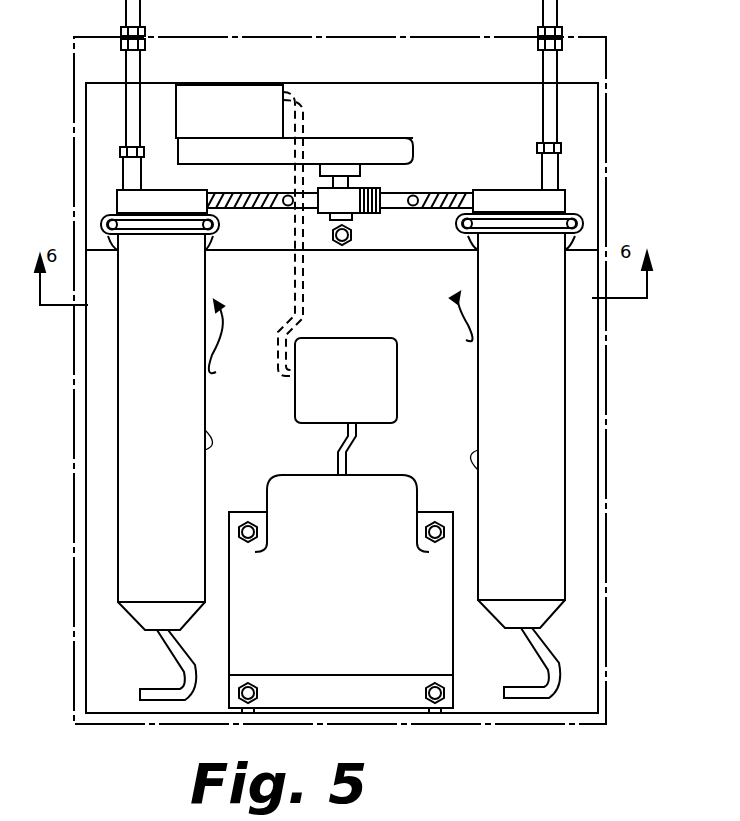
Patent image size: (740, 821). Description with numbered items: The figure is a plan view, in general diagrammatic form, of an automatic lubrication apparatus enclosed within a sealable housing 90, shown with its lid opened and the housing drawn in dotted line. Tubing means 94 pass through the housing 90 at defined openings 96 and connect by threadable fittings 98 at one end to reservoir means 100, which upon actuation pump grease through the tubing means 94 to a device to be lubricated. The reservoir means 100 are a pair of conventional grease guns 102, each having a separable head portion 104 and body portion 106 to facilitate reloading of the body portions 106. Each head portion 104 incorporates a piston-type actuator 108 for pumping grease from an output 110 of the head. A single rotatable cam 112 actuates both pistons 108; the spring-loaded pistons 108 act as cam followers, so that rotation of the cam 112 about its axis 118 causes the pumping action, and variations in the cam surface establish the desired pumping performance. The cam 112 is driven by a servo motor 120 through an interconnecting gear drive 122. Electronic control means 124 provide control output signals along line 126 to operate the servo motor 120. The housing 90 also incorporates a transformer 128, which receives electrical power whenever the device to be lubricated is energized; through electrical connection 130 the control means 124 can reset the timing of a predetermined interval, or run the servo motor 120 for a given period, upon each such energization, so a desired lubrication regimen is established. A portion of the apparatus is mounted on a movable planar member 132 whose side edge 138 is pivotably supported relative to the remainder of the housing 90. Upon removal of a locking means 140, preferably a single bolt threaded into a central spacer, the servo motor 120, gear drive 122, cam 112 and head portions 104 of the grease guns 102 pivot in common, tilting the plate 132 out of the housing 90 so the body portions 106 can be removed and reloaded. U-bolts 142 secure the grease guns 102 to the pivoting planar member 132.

The sealable housing 90 is at (607, 398).
The tubing means 94 is at (140, 15).
The defined openings 96 is at (144, 42).
The threadable fittings 98 is at (122, 150).
The reservoir means 100 is at (341, 333).
The grease guns 102 is at (205, 432).
The head portions 104 is at (117, 200).
The body portions 106 is at (176, 388).
The piston-type actuators 108 is at (256, 210).
The output 110 is at (142, 168).
The rotatable cam 112 is at (362, 213).
The axis 118 is at (360, 172).
The servo motor 120 is at (229, 111).
The gear drive 122 is at (375, 138).
The electronic control means 124 is at (397, 372).
The line 126 is at (303, 268).
The transformer 128 is at (358, 600).
The electrical connection 130 is at (360, 440).
The movable planar member 132 is at (362, 120).
The side edge 138 is at (378, 83).
The locking means 140 is at (352, 244).
The U-bolts 142 is at (186, 238).